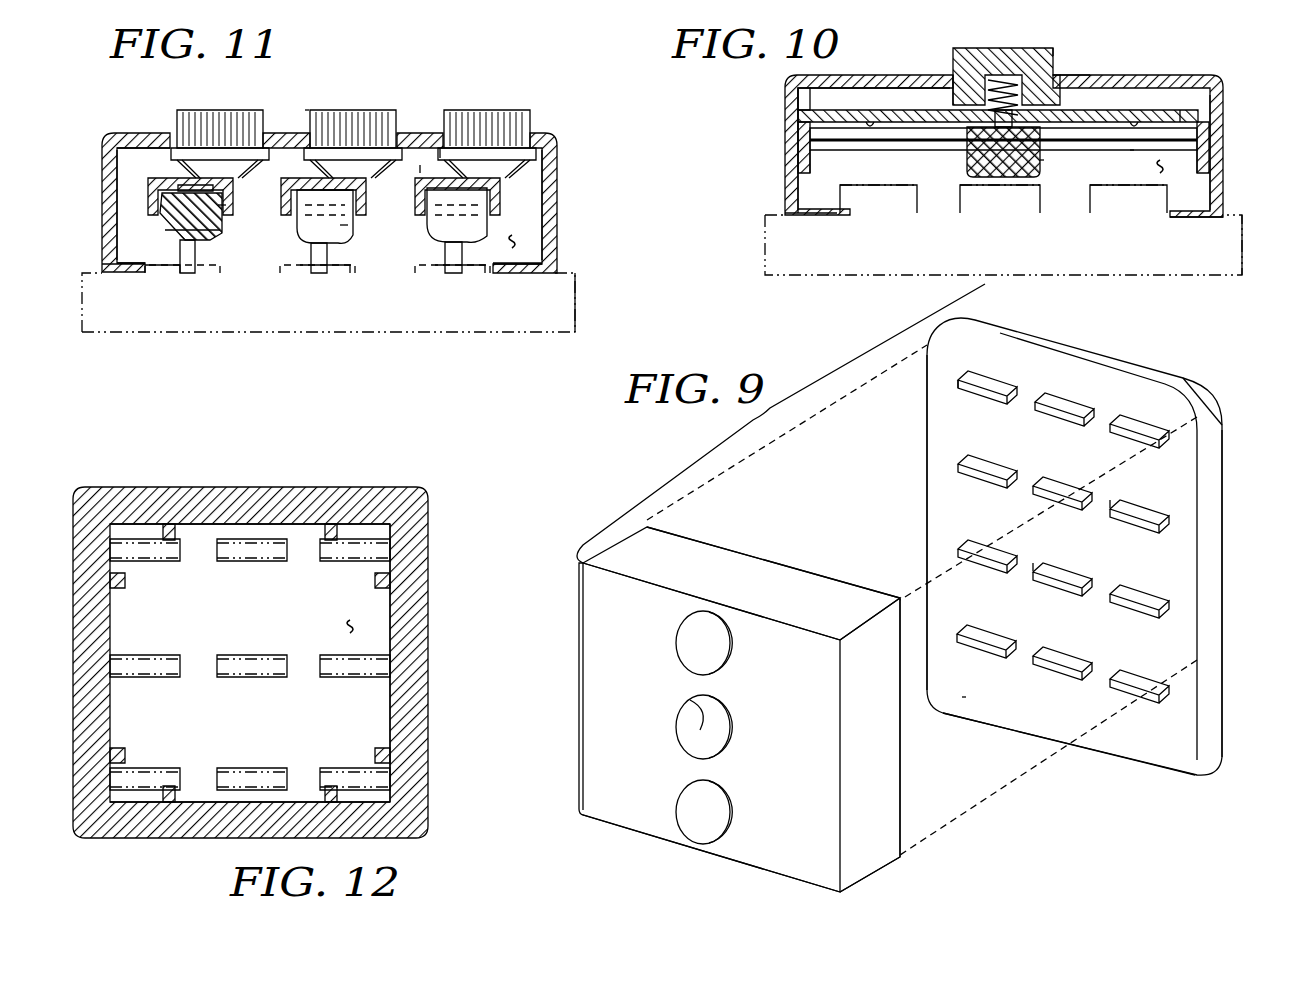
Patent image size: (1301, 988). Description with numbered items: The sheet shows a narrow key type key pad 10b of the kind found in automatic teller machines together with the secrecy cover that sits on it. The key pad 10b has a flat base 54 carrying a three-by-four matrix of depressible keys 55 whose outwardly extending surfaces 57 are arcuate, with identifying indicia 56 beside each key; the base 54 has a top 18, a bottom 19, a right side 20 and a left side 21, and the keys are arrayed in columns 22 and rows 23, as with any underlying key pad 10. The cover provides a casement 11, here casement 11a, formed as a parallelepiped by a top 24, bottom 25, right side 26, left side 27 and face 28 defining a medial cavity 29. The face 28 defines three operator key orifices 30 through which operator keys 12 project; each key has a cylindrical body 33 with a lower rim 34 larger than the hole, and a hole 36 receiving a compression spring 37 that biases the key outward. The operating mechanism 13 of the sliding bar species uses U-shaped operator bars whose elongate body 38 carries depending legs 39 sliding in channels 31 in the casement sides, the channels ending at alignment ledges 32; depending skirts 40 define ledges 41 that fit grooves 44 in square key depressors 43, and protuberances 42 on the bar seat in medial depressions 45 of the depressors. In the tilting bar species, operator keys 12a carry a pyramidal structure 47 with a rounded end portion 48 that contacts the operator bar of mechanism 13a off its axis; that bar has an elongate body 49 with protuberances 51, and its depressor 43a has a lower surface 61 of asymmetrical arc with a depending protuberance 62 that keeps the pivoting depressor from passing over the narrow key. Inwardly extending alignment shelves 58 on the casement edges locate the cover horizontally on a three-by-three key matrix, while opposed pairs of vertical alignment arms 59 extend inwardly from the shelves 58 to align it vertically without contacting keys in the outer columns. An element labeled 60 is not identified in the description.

In FIG. 11, the key pad 10 is at (180, 340).
In FIG. 10, the key pad 10 is at (1155, 282).
In FIG. 9, the key pad 10 is at (565, 628).
In FIG. 12, the narrow key type key pad 10b is at (250, 575).
In FIG. 9, the narrow key type key pad 10b is at (1200, 780).
In FIG. 10, the casement 11 is at (785, 210).
In FIG. 9, the casement 11 is at (705, 600).
In FIG. 11, the casement 11a is at (100, 140).
In FIG. 12, the casement 11a is at (312, 483).
In FIG. 9, the casement 11a is at (738, 550).
In FIG. 10, the operator keys 12 is at (1005, 50).
In FIG. 9, the operator keys 12 is at (683, 745).
In FIG. 11, the operator keys 12a is at (535, 133).
In FIG. 10, the operating mechanism 13 is at (1093, 112).
In FIG. 11, the operating mechanism 13a is at (325, 180).
In FIG. 9, the top 18 is at (1090, 360).
In FIG. 9, the bottom 19 is at (1143, 773).
In FIG. 11, the right side 20 is at (578, 298).
In FIG. 10, the right side 20 is at (1244, 258).
In FIG. 9, the right side 20 is at (1205, 680).
In FIG. 11, the left side 21 is at (82, 315).
In FIG. 10, the left side 21 is at (765, 258).
In FIG. 9, the left side 21 is at (925, 465).
In FIG. 9, the columns 22 is at (958, 460).
In FIG. 11, the rows 23 is at (440, 250).
In FIG. 10, the rows 23 is at (1130, 200).
In FIG. 9, the rows 23 is at (1125, 425).
In FIG. 9, the top 24 is at (790, 562).
In FIG. 9, the bottom 25 is at (600, 828).
In FIG. 11, the right side 26 is at (560, 218).
In FIG. 10, the right side 26 is at (1222, 168).
In FIG. 9, the right side 26 is at (878, 748).
In FIG. 11, the left side 27 is at (104, 195).
In FIG. 10, the left side 27 is at (788, 140).
In FIG. 9, the left side 27 is at (583, 590).
In FIG. 11, the face 28 is at (160, 135).
In FIG. 10, the face 28 is at (878, 76).
In FIG. 9, the face 28 is at (643, 620).
In FIG. 11, the medial cavity 29 is at (520, 240).
In FIG. 10, the medial cavity 29 is at (1170, 168).
In FIG. 10, the operator key orifices 30 is at (955, 88).
In FIG. 10, the channels 31 is at (796, 99).
In FIG. 10, the alignment ledges 32 is at (800, 213).
In FIG. 11, the cylindrical bodies 33 is at (340, 125).
In FIG. 10, the cylindrical bodies 33 is at (985, 50).
In FIG. 9, the cylindrical bodies 33 is at (705, 632).
In FIG. 11, the lower rims 34 is at (322, 110).
In FIG. 10, the lower rims 34 is at (930, 88).
In FIG. 10, the holes 36 is at (1055, 50).
In FIG. 10, the compression springs 37 is at (1025, 95).
In FIG. 10, the elongate body 38 is at (1182, 115).
In FIG. 10, the legs 39 is at (796, 162).
In FIG. 10, the skirts 40 is at (1135, 155).
In FIG. 11, the ledges 41 is at (225, 200).
In FIG. 10, the ledges 41 is at (920, 140).
In FIG. 11, the protuberances 42 is at (470, 178).
In FIG. 10, the protuberances 42 is at (870, 130).
In FIG. 10, the key depressors 43 is at (1000, 175).
In FIG. 11, the depressor 43a is at (195, 240).
In FIG. 11, the grooves 44 is at (195, 187).
In FIG. 10, the medial depression 45 is at (1045, 165).
In FIG. 11, the pyramidal structure 47 is at (215, 192).
In FIG. 11, the end portion 48 is at (345, 185).
In FIG. 11, the elongate body 49 is at (150, 182).
In FIG. 11, the protuberances 51 is at (348, 218).
In FIG. 12, the flat base 54 is at (400, 612).
In FIG. 9, the flat base 54 is at (1222, 483).
In FIG. 11, the depressible keys 55 is at (185, 275).
In FIG. 9, the depressible keys 55 is at (1125, 588).
In FIG. 9, the identifying indicia 56 is at (1115, 698).
In FIG. 11, the outwardly extending surface of the keys 57 is at (180, 250).
In FIG. 12, the outwardly extending surface of the keys 57 is at (325, 775).
In FIG. 9, the outwardly extending surface of the keys 57 is at (1050, 585).
In FIG. 11, the alignment shelves 58 is at (140, 273).
In FIG. 12, the alignment shelves 58 is at (178, 512).
In FIG. 12, the vertical alignment arms 59 is at (165, 540).
In FIG. 11, the gap 60 is at (424, 165).
In FIG. 11, the lower surface 61 is at (160, 225).
In FIG. 11, the depending protuberance 62 is at (225, 245).